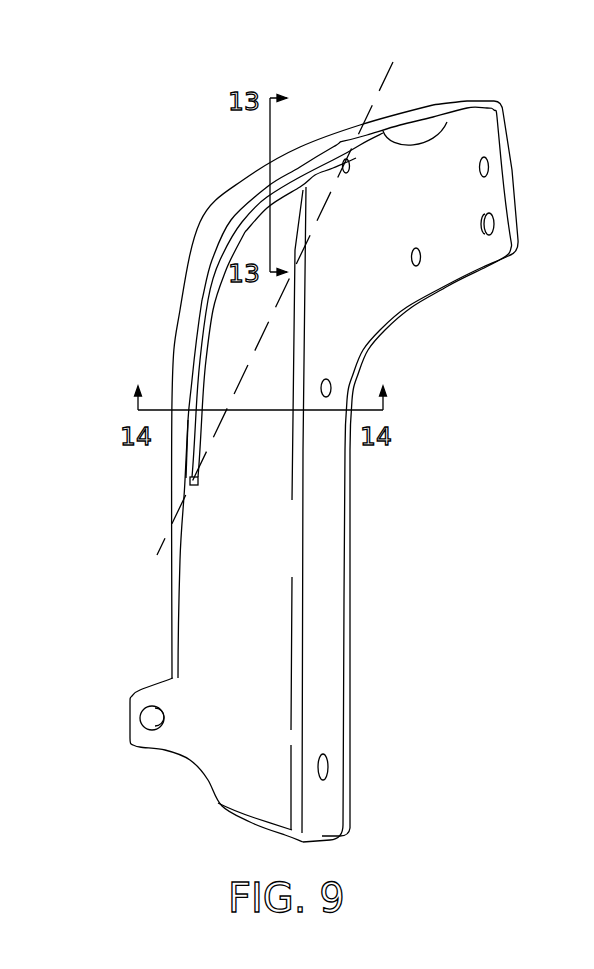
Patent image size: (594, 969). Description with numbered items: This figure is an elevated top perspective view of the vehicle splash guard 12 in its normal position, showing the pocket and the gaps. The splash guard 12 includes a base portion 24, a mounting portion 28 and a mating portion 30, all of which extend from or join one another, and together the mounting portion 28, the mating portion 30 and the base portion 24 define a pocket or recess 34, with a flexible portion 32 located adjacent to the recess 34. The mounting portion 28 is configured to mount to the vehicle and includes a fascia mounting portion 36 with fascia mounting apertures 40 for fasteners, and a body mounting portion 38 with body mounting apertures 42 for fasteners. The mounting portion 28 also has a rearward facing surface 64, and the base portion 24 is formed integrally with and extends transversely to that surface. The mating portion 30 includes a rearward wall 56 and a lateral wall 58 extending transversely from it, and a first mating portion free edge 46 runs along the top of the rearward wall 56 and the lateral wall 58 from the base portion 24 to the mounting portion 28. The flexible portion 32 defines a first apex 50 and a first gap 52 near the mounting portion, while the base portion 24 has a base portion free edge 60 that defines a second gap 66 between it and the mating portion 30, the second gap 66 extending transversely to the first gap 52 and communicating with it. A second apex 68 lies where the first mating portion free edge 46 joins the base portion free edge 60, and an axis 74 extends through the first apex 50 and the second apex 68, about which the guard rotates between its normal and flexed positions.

The vehicle splash guard 12 is at (85, 200).
The base portion 24 is at (220, 628).
The mounting portion 28 is at (345, 548).
The mating portion 30 is at (200, 247).
The flexible portion 32 is at (357, 172).
The pocket or recess 34 is at (240, 298).
The fascia mounting portion 36 is at (322, 607).
The body mounting portion 38 is at (455, 232).
The fascia mounting apertures 40 is at (327, 378).
The body mounting apertures 42 is at (412, 253).
The first mating portion free edge 46 is at (245, 197).
The first apex 50 is at (343, 157).
The first gap 52 is at (316, 172).
The rearward wall 56 is at (187, 363).
The lateral wall 58 is at (447, 122).
The base portion free edge 60 is at (202, 385).
The rearward facing surface 64 is at (324, 656).
The second gap 66 is at (190, 456).
The second apex 68 is at (190, 481).
The axis 74 is at (390, 70).